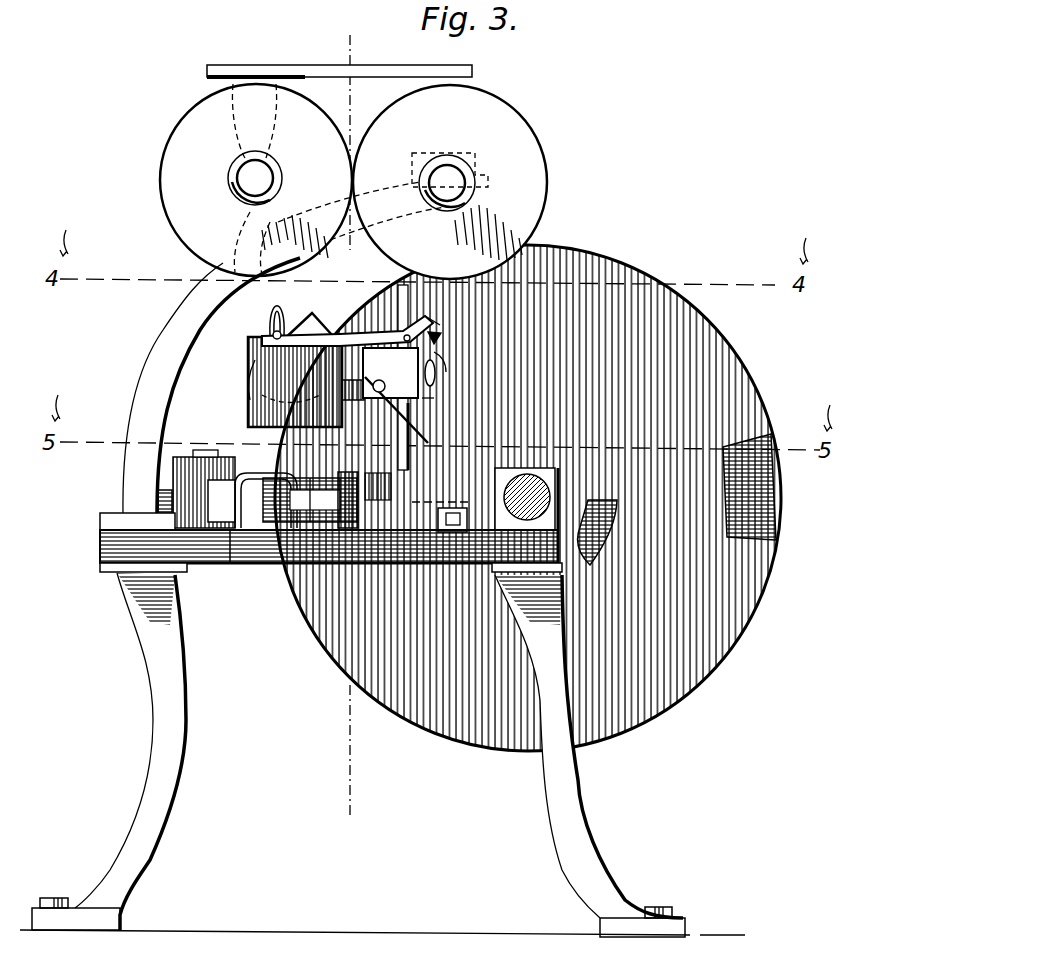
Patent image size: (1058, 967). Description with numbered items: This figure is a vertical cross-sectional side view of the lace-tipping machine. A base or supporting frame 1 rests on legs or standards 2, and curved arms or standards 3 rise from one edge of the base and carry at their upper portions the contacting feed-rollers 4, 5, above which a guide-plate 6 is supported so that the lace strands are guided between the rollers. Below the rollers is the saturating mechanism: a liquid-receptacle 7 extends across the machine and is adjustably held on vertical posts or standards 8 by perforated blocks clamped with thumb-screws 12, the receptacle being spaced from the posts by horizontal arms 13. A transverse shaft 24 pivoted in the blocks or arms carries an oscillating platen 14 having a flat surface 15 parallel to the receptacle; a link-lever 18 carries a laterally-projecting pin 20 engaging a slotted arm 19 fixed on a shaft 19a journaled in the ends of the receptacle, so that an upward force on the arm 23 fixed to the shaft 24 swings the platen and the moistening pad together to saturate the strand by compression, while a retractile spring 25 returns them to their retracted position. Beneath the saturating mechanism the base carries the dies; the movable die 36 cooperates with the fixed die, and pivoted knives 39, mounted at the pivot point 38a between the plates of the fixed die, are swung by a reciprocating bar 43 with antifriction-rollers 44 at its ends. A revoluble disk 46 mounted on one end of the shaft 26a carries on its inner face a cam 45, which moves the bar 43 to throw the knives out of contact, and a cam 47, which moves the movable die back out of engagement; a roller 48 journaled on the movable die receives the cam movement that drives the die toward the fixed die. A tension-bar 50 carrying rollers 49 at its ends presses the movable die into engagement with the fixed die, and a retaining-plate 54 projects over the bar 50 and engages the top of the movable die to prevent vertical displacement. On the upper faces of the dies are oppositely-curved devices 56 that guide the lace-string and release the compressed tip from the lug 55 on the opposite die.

The base or supporting frame 1 is at (110, 546).
The legs or standards 2 is at (186, 757).
The arms or standards 3 is at (165, 343).
The feed-roller 4 is at (540, 174).
The feed-roller 5 is at (165, 152).
The guide-plate 6 is at (310, 60).
The liquid-receptacle 7 is at (250, 350).
The vertical posts or standards 8 is at (398, 290).
The thumb-screws 12 is at (438, 376).
The horizontal arms 13 is at (428, 396).
The oscillating platen 14 is at (440, 322).
The flat surface 15 is at (442, 336).
The link-lever 18 is at (306, 345).
The slotted arm 19 is at (268, 318).
The shaft 19a is at (258, 360).
The laterally-projecting pin 20 is at (287, 327).
The arm 23 is at (396, 409).
The transverse shaft 24 is at (390, 373).
The retractile spring 25 is at (436, 362).
The shaft 26a is at (553, 472).
The movable die 36 is at (228, 570).
The pivot point of knives 38a is at (470, 575).
The swinging or pivoted knives 39 is at (412, 528).
The longitudinally-reciprocating bar 43 is at (505, 530).
The antifriction-rollers 44 is at (453, 533).
The cam 45 is at (620, 532).
The revoluble disk 46 is at (740, 387).
The cam 47 is at (780, 490).
The roller 48 is at (275, 572).
The rollers 49 is at (157, 500).
The tension-bar 50 is at (172, 482).
The retaining-plate 54 is at (227, 452).
The lug 55 is at (340, 528).
The oppositely-curved devices 56 is at (360, 490).